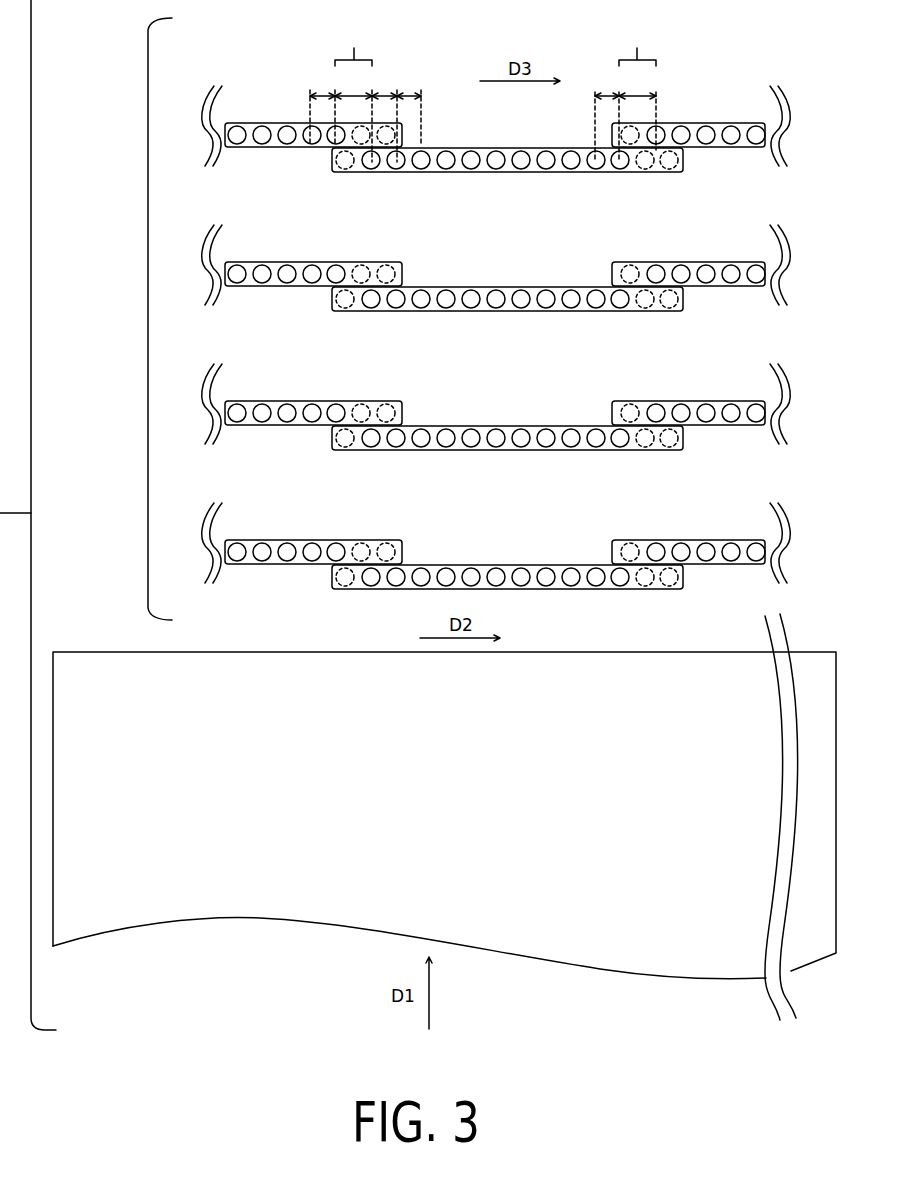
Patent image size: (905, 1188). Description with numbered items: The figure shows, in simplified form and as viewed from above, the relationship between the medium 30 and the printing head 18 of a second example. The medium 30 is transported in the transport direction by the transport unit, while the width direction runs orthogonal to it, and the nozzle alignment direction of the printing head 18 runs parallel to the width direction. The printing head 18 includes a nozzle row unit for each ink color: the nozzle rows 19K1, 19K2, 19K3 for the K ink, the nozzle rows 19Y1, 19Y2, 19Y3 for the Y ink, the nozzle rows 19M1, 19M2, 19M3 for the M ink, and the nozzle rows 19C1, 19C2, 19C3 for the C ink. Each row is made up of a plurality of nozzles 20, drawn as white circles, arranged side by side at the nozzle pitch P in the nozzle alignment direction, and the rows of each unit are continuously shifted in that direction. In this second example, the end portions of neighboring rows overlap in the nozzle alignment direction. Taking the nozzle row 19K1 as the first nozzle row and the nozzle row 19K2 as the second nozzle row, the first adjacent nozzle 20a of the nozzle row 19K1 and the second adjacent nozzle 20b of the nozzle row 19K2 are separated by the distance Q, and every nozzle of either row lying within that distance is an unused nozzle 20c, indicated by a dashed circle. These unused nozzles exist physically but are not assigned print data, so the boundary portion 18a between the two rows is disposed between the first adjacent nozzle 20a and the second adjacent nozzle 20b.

The printing head 18 is at (148, 320).
The boundary portion 18a is at (483, 94).
The nozzle row 19K1 is at (288, 122).
The nozzle row 19K2 is at (507, 147).
The nozzle row 19K3 is at (693, 122).
The nozzle row 19Y1 is at (260, 262).
The nozzle row 19Y2 is at (502, 286).
The nozzle row 19Y3 is at (693, 262).
The nozzle row 19M1 is at (260, 401).
The nozzle row 19M2 is at (502, 425).
The nozzle row 19M3 is at (693, 401).
The nozzle row 19C1 is at (260, 540).
The nozzle row 19C2 is at (502, 564).
The nozzle row 19C3 is at (693, 540).
The nozzle 20 is at (495, 169).
The first adjacent nozzle 20a is at (329, 141).
The second adjacent nozzle 20b is at (380, 166).
The unused nozzle 20c is at (352, 173).
The medium 30 is at (140, 918).